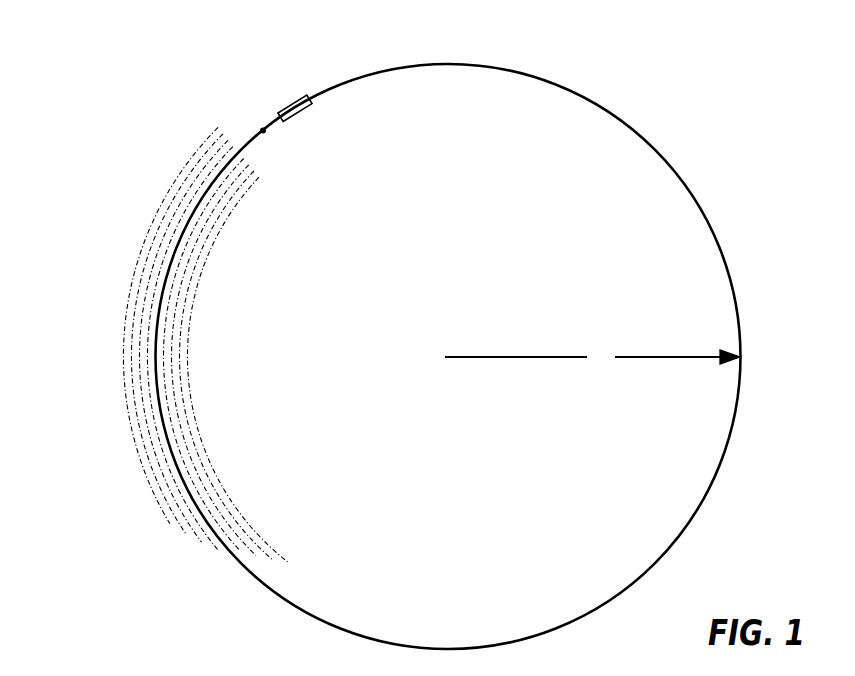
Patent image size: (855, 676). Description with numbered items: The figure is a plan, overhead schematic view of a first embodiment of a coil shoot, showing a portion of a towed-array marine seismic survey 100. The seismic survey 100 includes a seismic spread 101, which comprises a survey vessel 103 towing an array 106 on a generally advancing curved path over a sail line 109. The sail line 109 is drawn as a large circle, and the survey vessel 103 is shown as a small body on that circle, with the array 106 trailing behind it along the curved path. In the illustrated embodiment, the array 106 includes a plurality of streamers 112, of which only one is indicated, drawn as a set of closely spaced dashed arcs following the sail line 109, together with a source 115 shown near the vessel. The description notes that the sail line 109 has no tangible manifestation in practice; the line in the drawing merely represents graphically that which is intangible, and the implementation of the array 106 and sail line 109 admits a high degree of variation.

The towed-array marine seismic survey 100 is at (658, 38).
The seismic spread 101 is at (100, 54).
The survey vessel 103 is at (280, 112).
The array 106 is at (168, 116).
The sail line 109 is at (712, 227).
The streamers 112 is at (172, 187).
The source 115 is at (262, 130).